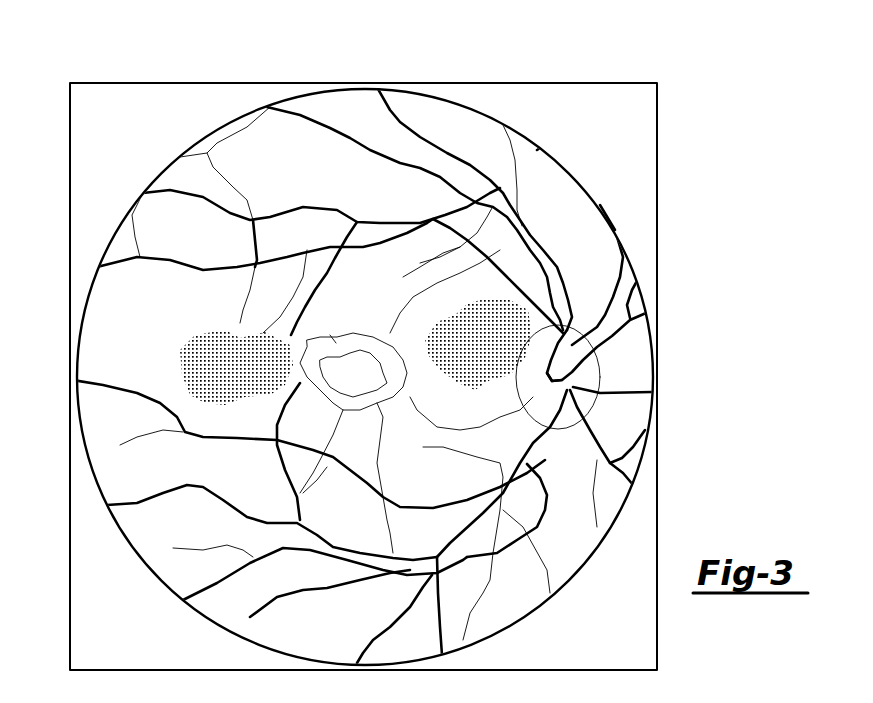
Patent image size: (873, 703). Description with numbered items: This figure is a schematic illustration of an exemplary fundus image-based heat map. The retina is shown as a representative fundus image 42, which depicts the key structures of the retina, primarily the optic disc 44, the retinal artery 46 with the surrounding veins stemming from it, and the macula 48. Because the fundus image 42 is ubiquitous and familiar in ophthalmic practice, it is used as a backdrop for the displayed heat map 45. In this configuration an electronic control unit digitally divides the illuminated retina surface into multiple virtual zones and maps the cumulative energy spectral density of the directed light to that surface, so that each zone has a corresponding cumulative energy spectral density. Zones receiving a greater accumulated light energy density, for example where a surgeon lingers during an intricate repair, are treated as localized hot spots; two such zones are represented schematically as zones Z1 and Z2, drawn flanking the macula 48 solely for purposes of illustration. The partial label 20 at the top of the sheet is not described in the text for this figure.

The imaging system 20 is at (627, 0).
The fundus image 42 is at (179, 64).
The optic disc 44 is at (615, 370).
The heat map 45 is at (657, 128).
The retinal artery 46 is at (572, 262).
The macula 48 is at (322, 327).
The zone Z1 is at (236, 367).
The zone Z2 is at (478, 344).